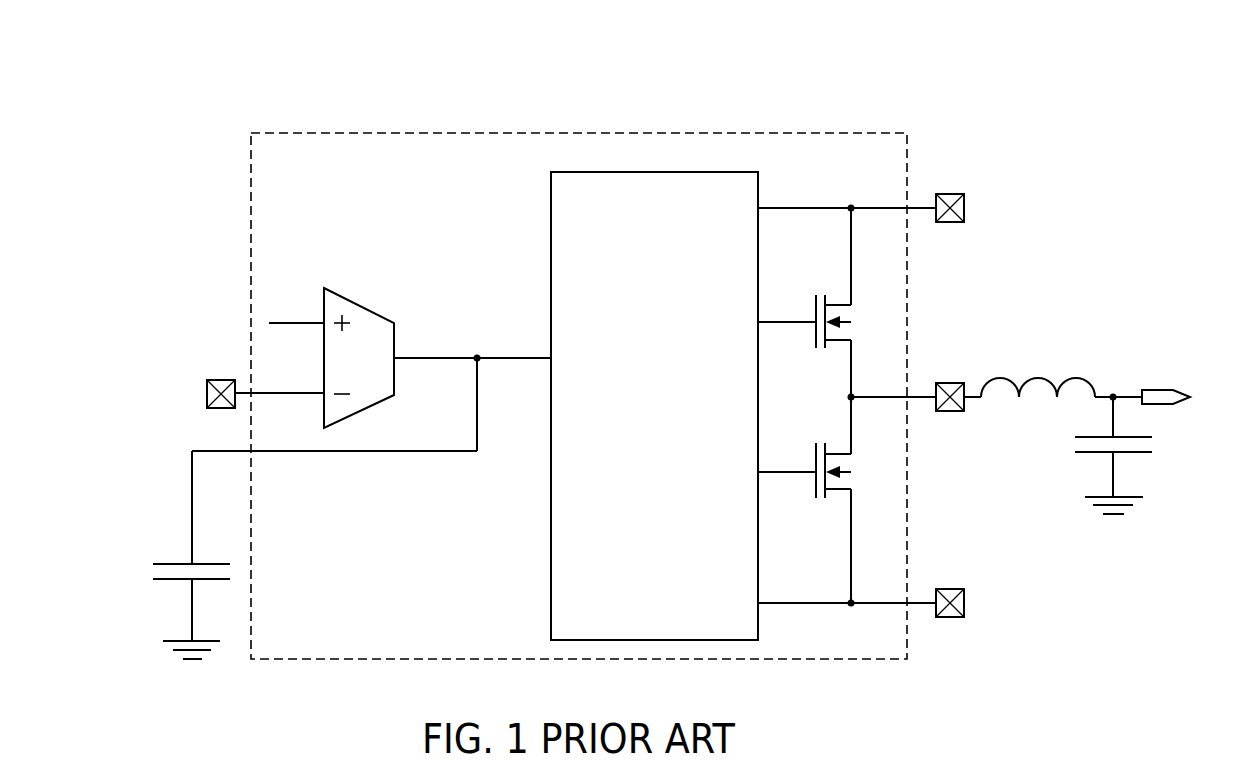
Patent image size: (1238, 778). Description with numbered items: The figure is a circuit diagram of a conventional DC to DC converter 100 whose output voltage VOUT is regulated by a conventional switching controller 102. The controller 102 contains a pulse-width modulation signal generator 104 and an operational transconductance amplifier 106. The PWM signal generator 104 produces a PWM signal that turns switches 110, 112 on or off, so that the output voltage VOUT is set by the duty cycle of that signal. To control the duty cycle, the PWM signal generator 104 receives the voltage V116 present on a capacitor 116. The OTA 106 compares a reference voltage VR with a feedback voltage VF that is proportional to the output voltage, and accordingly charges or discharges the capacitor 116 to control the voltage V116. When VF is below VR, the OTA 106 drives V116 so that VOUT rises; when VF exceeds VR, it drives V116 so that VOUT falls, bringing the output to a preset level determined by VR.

The DC to DC converter 100 is at (182, 145).
The switching controller 102 is at (412, 132).
The pulse-width modulation (PWM) signal generator 104 is at (683, 172).
The operational transconductance amplifier (OTA) 106 is at (395, 342).
The switch 110 is at (816, 329).
The switch 112 is at (816, 479).
The capacitor 116 is at (183, 563).